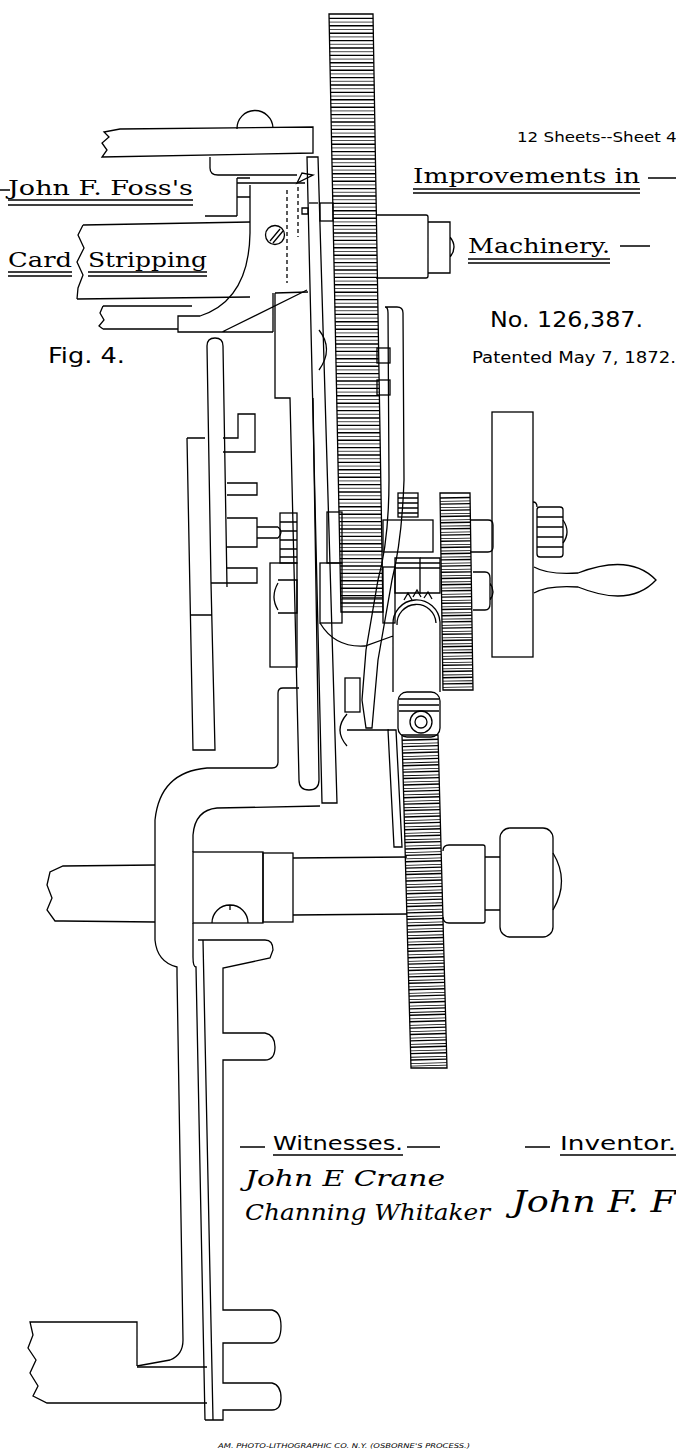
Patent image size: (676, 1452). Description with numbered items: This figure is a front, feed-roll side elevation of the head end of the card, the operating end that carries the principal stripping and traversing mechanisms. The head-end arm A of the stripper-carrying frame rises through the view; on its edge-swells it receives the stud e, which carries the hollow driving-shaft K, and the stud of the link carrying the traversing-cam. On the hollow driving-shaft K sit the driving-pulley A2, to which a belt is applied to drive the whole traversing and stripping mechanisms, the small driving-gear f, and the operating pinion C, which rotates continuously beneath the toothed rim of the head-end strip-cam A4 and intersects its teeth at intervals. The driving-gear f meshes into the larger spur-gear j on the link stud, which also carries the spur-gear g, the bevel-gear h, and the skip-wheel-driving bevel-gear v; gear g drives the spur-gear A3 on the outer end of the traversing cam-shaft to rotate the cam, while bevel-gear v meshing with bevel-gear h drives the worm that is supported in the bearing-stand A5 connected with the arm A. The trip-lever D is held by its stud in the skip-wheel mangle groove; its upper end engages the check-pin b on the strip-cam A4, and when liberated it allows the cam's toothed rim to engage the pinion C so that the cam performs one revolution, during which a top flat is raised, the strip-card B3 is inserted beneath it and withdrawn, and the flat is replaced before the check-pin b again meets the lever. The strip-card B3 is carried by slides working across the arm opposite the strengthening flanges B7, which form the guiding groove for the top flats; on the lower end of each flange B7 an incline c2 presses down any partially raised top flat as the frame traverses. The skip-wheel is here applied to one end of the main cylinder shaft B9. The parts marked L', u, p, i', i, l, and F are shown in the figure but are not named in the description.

The top bar L' is at (207, 147).
The operating pinion C is at (242, 257).
The strengthening flange B7 is at (253, 251).
The strip-card B3 is at (145, 317).
The screw u is at (305, 205).
The pin p is at (312, 213).
The incline c2 is at (326, 212).
The head-end strip-cam A4 is at (356, 313).
The check-pin b is at (362, 567).
The key i' is at (383, 349).
The key i is at (383, 381).
The trip-lever D is at (384, 517).
The head-end arm A is at (278, 452).
The stud e is at (269, 542).
The spur-gear A3 is at (408, 505).
The hollow driving-shaft K is at (438, 536).
The driving-gear f is at (456, 591).
The spur-gear j is at (474, 589).
The spur-gear g is at (407, 575).
The bevel-gear h is at (430, 575).
The bevel-gear v is at (416, 607).
The bearing-stand A5 is at (378, 684).
The driving-pulley A2 is at (510, 533).
The nut l is at (555, 532).
The gear F is at (397, 817).
The main cylinder shaft B9 is at (304, 882).